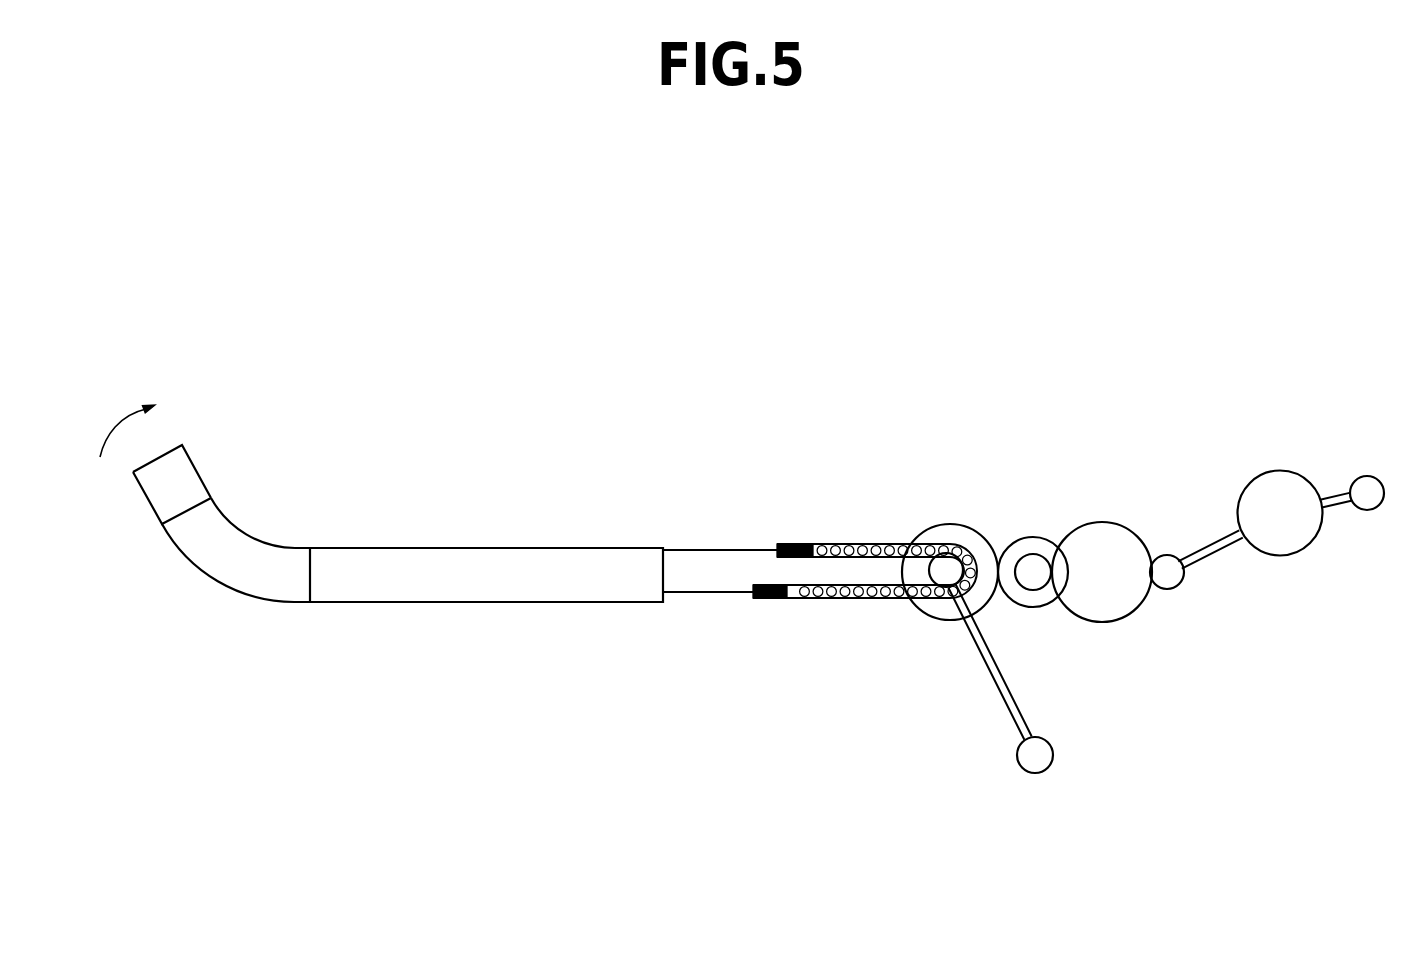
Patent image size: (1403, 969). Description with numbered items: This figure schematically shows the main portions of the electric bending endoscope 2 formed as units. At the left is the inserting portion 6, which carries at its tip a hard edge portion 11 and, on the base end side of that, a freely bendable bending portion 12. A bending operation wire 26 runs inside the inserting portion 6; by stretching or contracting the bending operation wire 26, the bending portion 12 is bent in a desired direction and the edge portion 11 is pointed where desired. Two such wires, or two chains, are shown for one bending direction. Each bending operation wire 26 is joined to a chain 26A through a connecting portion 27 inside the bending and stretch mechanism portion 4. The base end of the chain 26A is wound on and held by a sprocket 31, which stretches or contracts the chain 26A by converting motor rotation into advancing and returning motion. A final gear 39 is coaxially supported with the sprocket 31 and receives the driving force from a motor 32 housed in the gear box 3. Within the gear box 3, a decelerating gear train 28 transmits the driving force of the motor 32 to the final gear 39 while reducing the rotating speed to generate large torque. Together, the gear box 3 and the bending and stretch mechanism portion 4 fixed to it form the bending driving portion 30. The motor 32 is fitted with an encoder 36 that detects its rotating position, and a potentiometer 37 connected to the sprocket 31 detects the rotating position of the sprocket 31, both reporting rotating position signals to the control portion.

The electric bending endoscope 2 is at (653, 338).
The gear box 3 is at (1378, 400).
The bending and stretch mechanism portion 4 is at (1035, 782).
The inserting portion 6 is at (665, 688).
The edge portion 11 is at (197, 466).
The bending portion 12 is at (310, 623).
The bending operation wire 26 is at (685, 593).
The chain 26A is at (850, 547).
The connecting portion 27 is at (768, 586).
The decelerating gear train 28 is at (1205, 632).
The bending driving portion 30 is at (1045, 488).
The sprocket 31 is at (947, 571).
The motor 32 is at (1273, 471).
The encoder 36 is at (1367, 476).
The potentiometer 37 is at (1055, 753).
The final gear 39 is at (974, 530).